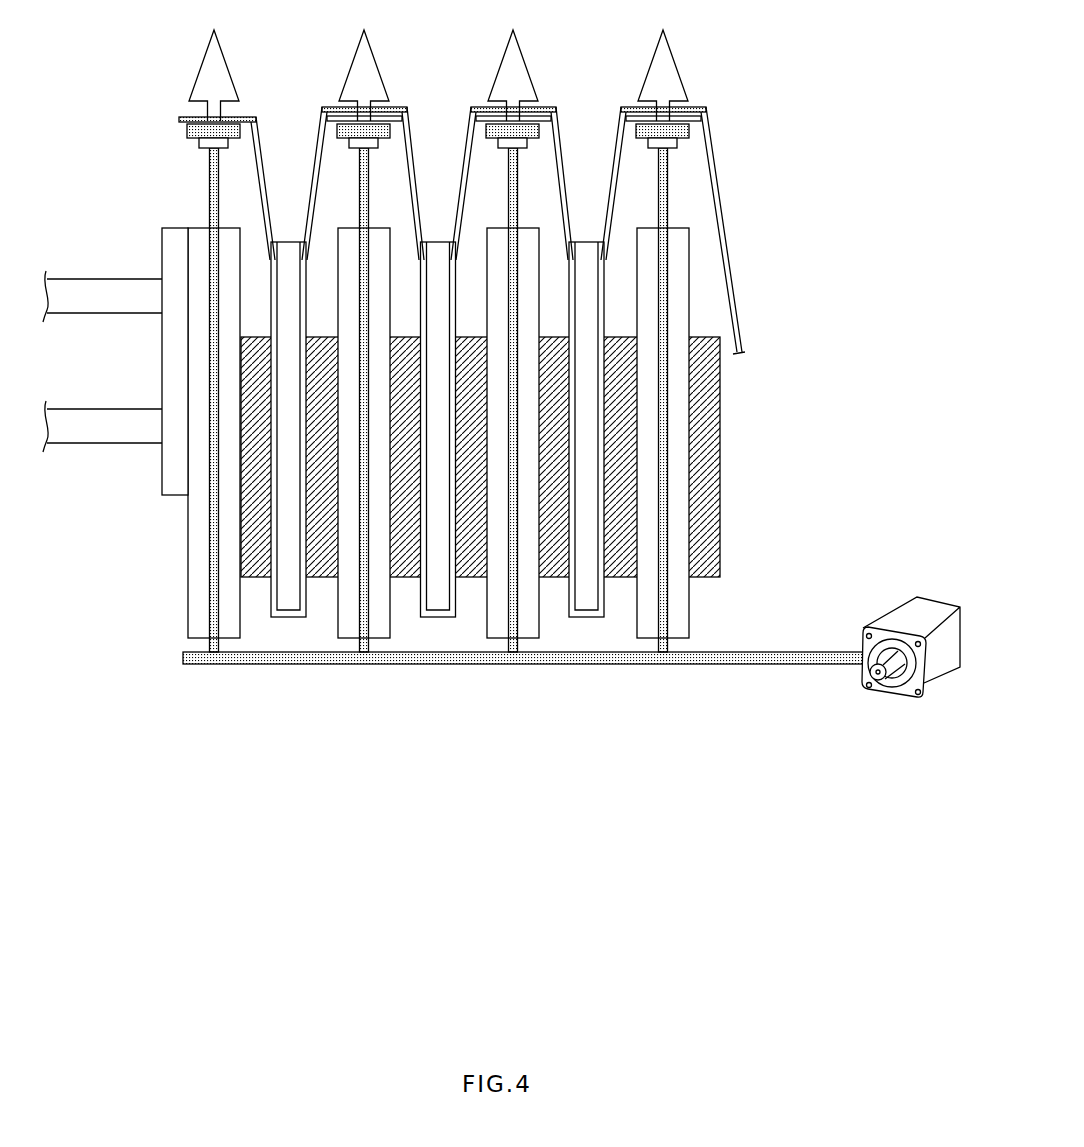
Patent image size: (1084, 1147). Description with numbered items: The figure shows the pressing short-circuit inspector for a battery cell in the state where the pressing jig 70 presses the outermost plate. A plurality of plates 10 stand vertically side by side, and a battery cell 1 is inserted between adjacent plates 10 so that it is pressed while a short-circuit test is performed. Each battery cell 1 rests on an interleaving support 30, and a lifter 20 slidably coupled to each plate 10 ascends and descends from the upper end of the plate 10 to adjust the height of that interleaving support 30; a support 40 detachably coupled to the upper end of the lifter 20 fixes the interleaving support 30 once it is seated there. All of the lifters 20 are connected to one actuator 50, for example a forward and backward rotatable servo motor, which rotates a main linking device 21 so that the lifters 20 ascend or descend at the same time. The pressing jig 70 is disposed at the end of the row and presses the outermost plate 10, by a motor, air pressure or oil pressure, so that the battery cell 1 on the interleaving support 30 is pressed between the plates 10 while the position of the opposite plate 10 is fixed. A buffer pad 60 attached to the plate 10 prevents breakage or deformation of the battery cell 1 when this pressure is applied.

The battery cell 1 is at (587, 240).
The plate 10 is at (677, 273).
The lifter 20 is at (662, 603).
The main linking device 21 is at (733, 665).
The interleaving support 30 is at (463, 180).
The support 40 is at (515, 66).
The actuator 50 is at (895, 610).
The buffer pad 60 is at (703, 432).
The pressing jig 70 is at (108, 293).